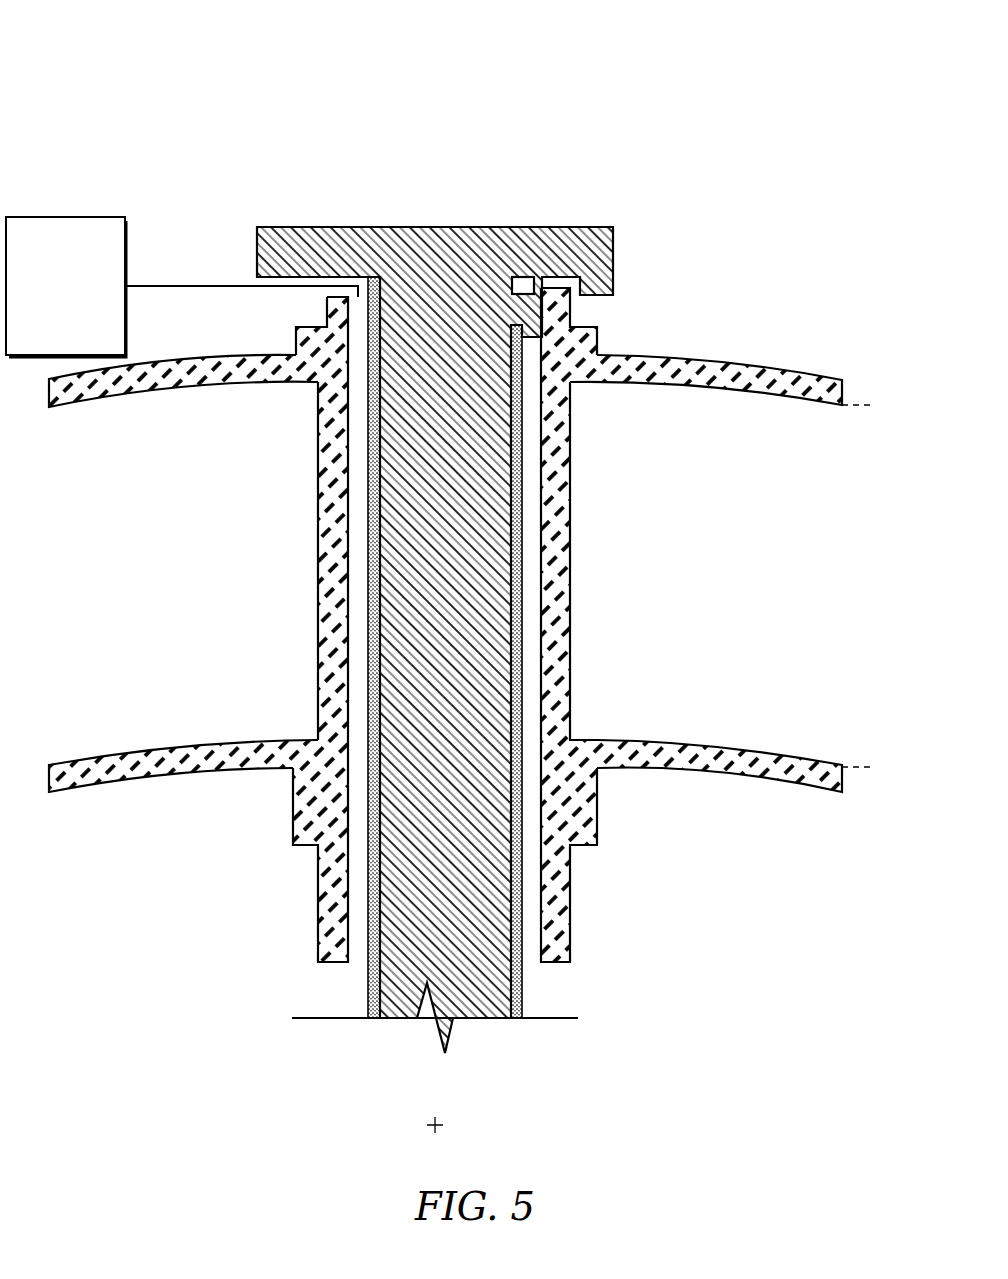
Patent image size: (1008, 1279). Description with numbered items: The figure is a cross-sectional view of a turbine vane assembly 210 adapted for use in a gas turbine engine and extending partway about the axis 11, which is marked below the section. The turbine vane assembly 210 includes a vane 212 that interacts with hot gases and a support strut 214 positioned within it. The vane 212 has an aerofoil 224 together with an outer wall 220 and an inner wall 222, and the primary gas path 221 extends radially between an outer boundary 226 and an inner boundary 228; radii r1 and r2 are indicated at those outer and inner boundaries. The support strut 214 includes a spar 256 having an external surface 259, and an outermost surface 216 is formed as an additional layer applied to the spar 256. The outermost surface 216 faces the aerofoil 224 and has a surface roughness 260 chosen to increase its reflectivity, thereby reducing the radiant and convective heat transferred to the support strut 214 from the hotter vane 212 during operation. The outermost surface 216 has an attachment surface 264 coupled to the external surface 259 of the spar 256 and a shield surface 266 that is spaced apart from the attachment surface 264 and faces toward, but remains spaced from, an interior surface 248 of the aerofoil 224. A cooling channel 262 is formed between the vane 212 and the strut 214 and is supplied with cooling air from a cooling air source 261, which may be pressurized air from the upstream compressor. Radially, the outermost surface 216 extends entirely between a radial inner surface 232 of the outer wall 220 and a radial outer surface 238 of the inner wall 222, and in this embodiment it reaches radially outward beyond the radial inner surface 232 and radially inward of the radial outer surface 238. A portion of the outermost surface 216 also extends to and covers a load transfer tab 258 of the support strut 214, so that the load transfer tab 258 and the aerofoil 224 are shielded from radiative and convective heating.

The turbine vane assembly 210 is at (135, 110).
The vane 212 is at (221, 527).
The support strut 214 is at (648, 266).
The outermost surface 216 is at (688, 553).
The outer wall 220 is at (45, 397).
The primary gas path 221 is at (866, 405).
The inner wall 222 is at (44, 781).
The aerofoil 224 is at (256, 597).
The outer boundary 226 is at (854, 402).
The inner boundary 228 is at (863, 763).
The radial inner surface 232 is at (675, 385).
The radial outer surface 238 is at (702, 740).
The interior surface 248 is at (334, 482).
The spar 256 is at (525, 527).
The load transfer tab 258 is at (528, 291).
The external surface 259 is at (523, 708).
The surface roughness 260 is at (523, 568).
The cooling air source 261 is at (71, 216).
The cooling channel 262 is at (355, 958).
The attachment surface 264 is at (508, 624).
The shield surface 266 is at (527, 605).
The first radius r1 is at (761, 398).
The second radius r2 is at (762, 753).
The axis 11 is at (437, 1124).